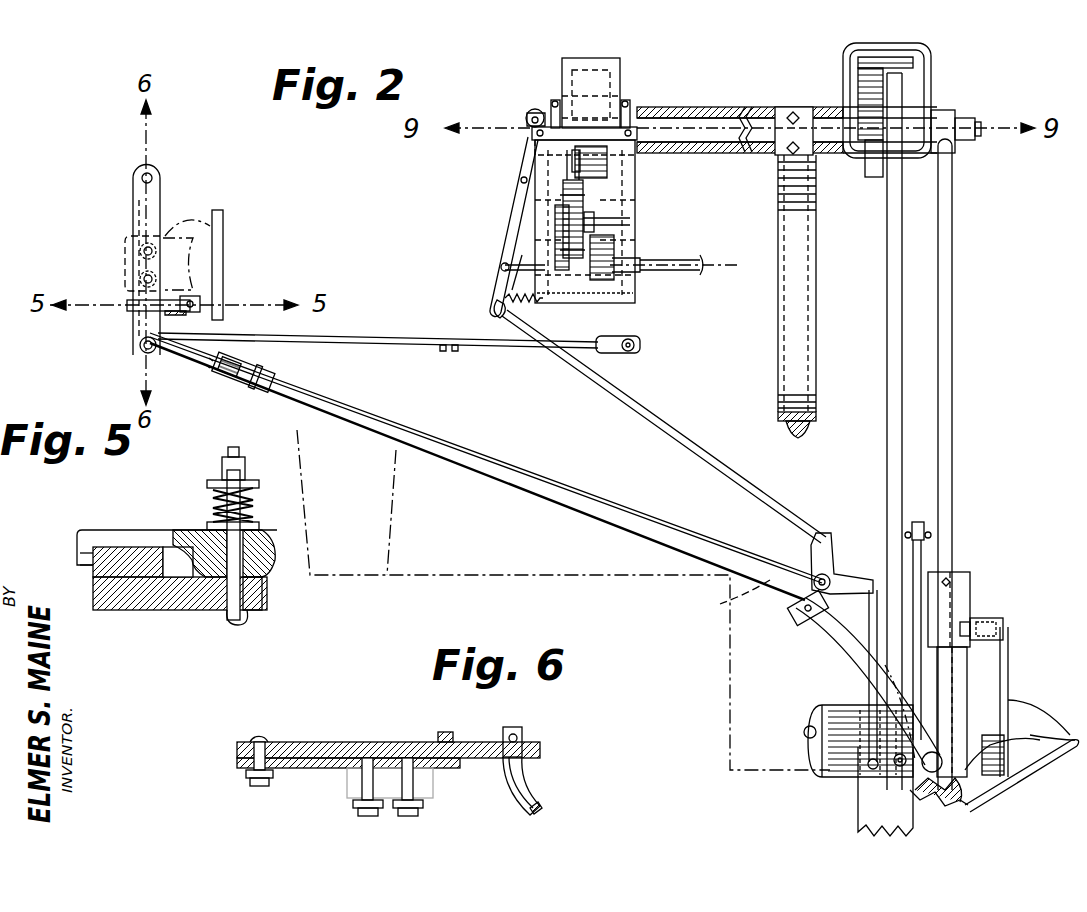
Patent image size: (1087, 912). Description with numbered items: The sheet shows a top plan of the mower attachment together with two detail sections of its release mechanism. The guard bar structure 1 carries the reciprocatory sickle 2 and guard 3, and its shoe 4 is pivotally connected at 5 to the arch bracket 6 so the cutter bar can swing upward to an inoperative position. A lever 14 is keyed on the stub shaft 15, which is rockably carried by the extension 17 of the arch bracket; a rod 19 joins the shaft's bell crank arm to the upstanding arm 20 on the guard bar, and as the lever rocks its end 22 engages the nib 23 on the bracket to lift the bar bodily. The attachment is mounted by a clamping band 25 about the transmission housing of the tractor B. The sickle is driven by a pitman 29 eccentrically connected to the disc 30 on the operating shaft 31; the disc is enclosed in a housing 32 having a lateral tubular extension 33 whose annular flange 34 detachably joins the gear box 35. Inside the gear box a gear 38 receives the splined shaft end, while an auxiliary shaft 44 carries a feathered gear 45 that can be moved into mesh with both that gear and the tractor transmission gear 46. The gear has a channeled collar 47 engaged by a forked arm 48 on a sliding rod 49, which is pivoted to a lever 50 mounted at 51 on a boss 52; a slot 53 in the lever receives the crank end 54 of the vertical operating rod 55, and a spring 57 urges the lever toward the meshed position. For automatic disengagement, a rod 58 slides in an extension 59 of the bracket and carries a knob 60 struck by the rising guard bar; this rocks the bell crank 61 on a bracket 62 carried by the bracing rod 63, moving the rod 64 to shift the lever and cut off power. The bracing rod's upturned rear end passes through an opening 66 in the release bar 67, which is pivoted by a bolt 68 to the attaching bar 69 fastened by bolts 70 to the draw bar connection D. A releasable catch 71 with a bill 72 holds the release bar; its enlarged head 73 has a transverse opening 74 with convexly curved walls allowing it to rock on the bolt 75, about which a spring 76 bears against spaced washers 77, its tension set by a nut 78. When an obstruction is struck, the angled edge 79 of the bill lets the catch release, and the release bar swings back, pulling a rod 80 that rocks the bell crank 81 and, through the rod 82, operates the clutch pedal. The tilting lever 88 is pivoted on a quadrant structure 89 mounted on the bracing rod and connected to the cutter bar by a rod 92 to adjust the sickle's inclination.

In FIG. 2, the guard bar structure 1 is at (858, 820).
In FIG. 2, the reciprocatory sickle 2 is at (940, 812).
In FIG. 2, the guard 3 is at (968, 808).
In FIG. 2, the shoe 4 is at (1018, 735).
In FIG. 2, the pivotal connection 5 is at (805, 734).
In FIG. 2, the arch bracket 6 is at (850, 706).
In FIG. 2, the lever 14 is at (924, 555).
In FIG. 2, the stub shaft 15 is at (846, 660).
In FIG. 2, the extension 17 is at (960, 672).
In FIG. 2, the rod 19 is at (1010, 680).
In FIG. 2, the upstanding arm 20 is at (1035, 780).
In FIG. 2, the end of lever 22 is at (990, 640).
In FIG. 2, the nib 23 is at (885, 675).
In FIG. 2, the clamping band 25 is at (845, 280).
In FIG. 2, the pitman 29 is at (903, 322).
In FIG. 2, the disc 30 is at (872, 178).
In FIG. 2, the operating shaft 31 is at (710, 110).
In FIG. 2, the housing 32 is at (915, 68).
In FIG. 2, the lateral tubular extension 33 is at (780, 105).
In FIG. 2, the annular flange 34 is at (630, 106).
In FIG. 2, the gear box 35 is at (618, 66).
In FIG. 2, the gear 38 is at (605, 172).
In FIG. 2, the auxiliary shaft 44 is at (610, 220).
In FIG. 2, the gear 45 is at (614, 250).
In FIG. 2, the gear 46 is at (745, 278).
In FIG. 2, the channeled collar 47 is at (563, 215).
In FIG. 2, the forked arm 48 is at (555, 240).
In FIG. 2, the rod 49 is at (520, 272).
In FIG. 2, the lever 50 is at (512, 268).
In FIG. 2, the pivot 51 is at (526, 175).
In FIG. 2, the boss 52 is at (522, 190).
In FIG. 2, the slot 53 is at (530, 140).
In FIG. 2, the crank end 54 is at (540, 112).
In FIG. 2, the operating rod 55 is at (528, 118).
In FIG. 2, the spring 57 is at (495, 312).
In FIG. 2, the rod 58 is at (972, 595).
In FIG. 2, the extension 59 is at (868, 770).
In FIG. 2, the knob 60 is at (896, 764).
In FIG. 2, the bell crank 61 is at (833, 555).
In FIG. 2, the bracket 62 is at (795, 620).
In FIG. 2, the bracing rod 63 is at (745, 584).
In FIG. 6, the bracing rod 63 is at (535, 795).
In FIG. 2, the rod 64 is at (760, 498).
In FIG. 6, the opening 66 is at (522, 748).
In FIG. 2, the release bar 67 is at (160, 195).
In FIG. 5, the release bar 67 is at (95, 577).
In FIG. 6, the release bar 67 is at (340, 742).
In FIG. 2, the bolt 68 is at (152, 174).
In FIG. 6, the bolt 68 is at (262, 735).
In FIG. 5, the attaching bar 69 is at (160, 610).
In FIG. 6, the attaching bar 69 is at (320, 768).
In FIG. 2, the bolts 70 is at (142, 246).
In FIG. 6, the bolts 70 is at (375, 815).
In FIG. 2, the releasable catch 71 is at (135, 310).
In FIG. 5, the releasable catch 71 is at (140, 547).
In FIG. 6, the releasable catch 71 is at (450, 732).
In FIG. 5, the bill 72 is at (80, 552).
In FIG. 5, the enlarged head 73 is at (262, 560).
In FIG. 5, the transverse opening 74 is at (275, 545).
In FIG. 2, the bolt 75 is at (195, 300).
In FIG. 5, the bolt 75 is at (262, 605).
In FIG. 5, the spring 76 is at (258, 502).
In FIG. 5, the washers 77 is at (255, 480).
In FIG. 2, the nut 78 is at (185, 316).
In FIG. 5, the nut 78 is at (222, 470).
In FIG. 5, the angled edge 79 is at (92, 566).
In FIG. 2, the rod 80 is at (340, 336).
In FIG. 2, the bell crank 81 is at (505, 350).
In FIG. 2, the rod 82 is at (670, 343).
In FIG. 2, the tilting lever 88 is at (275, 384).
In FIG. 2, the quadrant structure 89 is at (245, 386).
In FIG. 2, the rod 92 is at (585, 496).
In FIG. 2, the draw bar connection D is at (125, 255).
In FIG. 6, the draw bar connection D is at (420, 782).
In FIG. 2, the tractor B is at (200, 252).